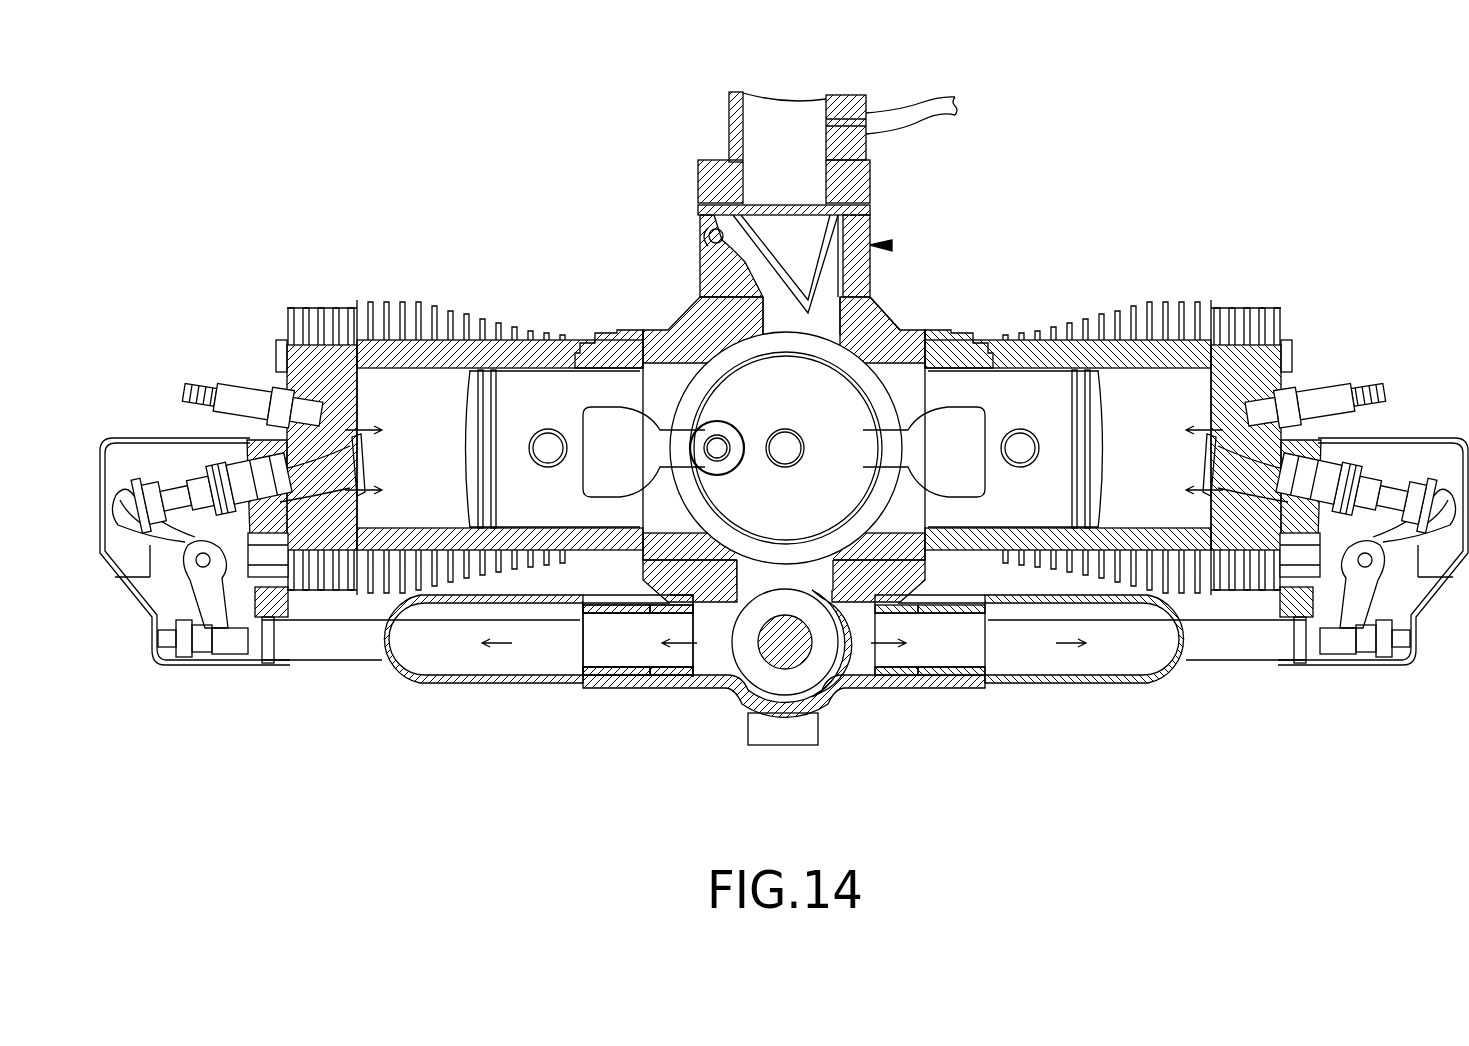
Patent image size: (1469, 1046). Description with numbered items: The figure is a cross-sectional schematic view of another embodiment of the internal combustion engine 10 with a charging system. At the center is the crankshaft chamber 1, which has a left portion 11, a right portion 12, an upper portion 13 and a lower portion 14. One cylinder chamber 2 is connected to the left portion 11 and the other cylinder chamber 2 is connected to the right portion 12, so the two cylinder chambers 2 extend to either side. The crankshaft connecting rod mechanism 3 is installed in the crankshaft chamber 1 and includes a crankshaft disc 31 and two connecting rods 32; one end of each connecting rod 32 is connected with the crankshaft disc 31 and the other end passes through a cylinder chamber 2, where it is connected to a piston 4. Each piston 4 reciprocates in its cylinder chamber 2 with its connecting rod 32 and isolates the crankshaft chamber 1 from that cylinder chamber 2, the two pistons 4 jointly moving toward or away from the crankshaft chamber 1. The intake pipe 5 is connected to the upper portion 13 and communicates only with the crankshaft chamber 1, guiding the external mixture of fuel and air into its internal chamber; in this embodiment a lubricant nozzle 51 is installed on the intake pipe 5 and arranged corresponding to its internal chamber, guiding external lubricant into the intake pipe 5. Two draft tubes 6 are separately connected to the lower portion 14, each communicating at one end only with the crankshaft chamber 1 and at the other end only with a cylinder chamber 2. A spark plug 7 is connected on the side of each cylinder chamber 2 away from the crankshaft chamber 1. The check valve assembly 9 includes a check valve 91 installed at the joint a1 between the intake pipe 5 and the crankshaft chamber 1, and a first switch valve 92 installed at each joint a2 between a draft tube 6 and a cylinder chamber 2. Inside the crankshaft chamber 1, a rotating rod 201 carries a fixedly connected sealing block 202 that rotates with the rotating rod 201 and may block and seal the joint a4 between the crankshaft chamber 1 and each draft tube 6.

The internal combustion engine 10 is at (806, 47).
The crankshaft chamber 1 is at (912, 306).
The left portion 11 is at (655, 332).
The right portion 12 is at (915, 328).
The upper portion 13 is at (865, 295).
The cylinder chamber 2 is at (578, 348).
The crankshaft connecting rod mechanism 3 is at (663, 762).
The crankshaft disc 31 is at (665, 567).
The connecting rod 32 is at (600, 612).
The piston 4 is at (541, 510).
The intake pipe 5 is at (857, 176).
The lubricant nozzle 51 is at (900, 108).
The draft tube 6 is at (436, 684).
The spark plug 7 is at (245, 400).
The check valve assembly 9 is at (728, 272).
The check valve 91 is at (700, 240).
The first switch valve 92 is at (242, 482).
The lower portion 14 is at (815, 702).
The rotating rod 201 is at (772, 656).
The sealing block 202 is at (840, 645).
The joint a1 is at (890, 245).
The joint a2 is at (360, 490).
The joint a4 is at (720, 656).